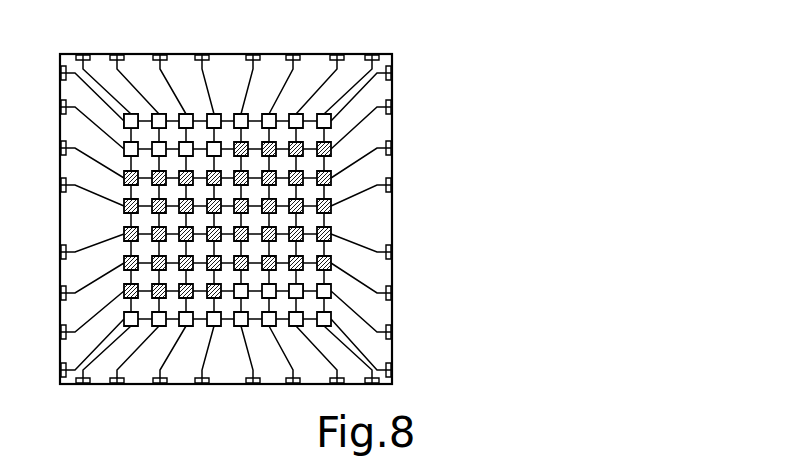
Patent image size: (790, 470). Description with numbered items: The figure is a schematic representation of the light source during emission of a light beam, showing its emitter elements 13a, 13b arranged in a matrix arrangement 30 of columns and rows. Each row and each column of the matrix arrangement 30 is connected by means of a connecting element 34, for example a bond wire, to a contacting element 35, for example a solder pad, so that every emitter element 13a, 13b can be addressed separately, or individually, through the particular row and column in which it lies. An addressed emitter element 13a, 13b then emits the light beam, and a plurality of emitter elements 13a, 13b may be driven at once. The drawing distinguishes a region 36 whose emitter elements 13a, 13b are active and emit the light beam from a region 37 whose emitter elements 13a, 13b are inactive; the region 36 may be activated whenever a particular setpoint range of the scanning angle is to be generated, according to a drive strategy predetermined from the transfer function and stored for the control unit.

The emitter element 13a is at (131, 114).
The emitter element 13b is at (159, 114).
The matrix arrangement 30 is at (271, 201).
The connecting element 34 is at (358, 276).
The contacting element 35 is at (393, 150).
The region 36 is at (282, 195).
The region 37 is at (296, 304).